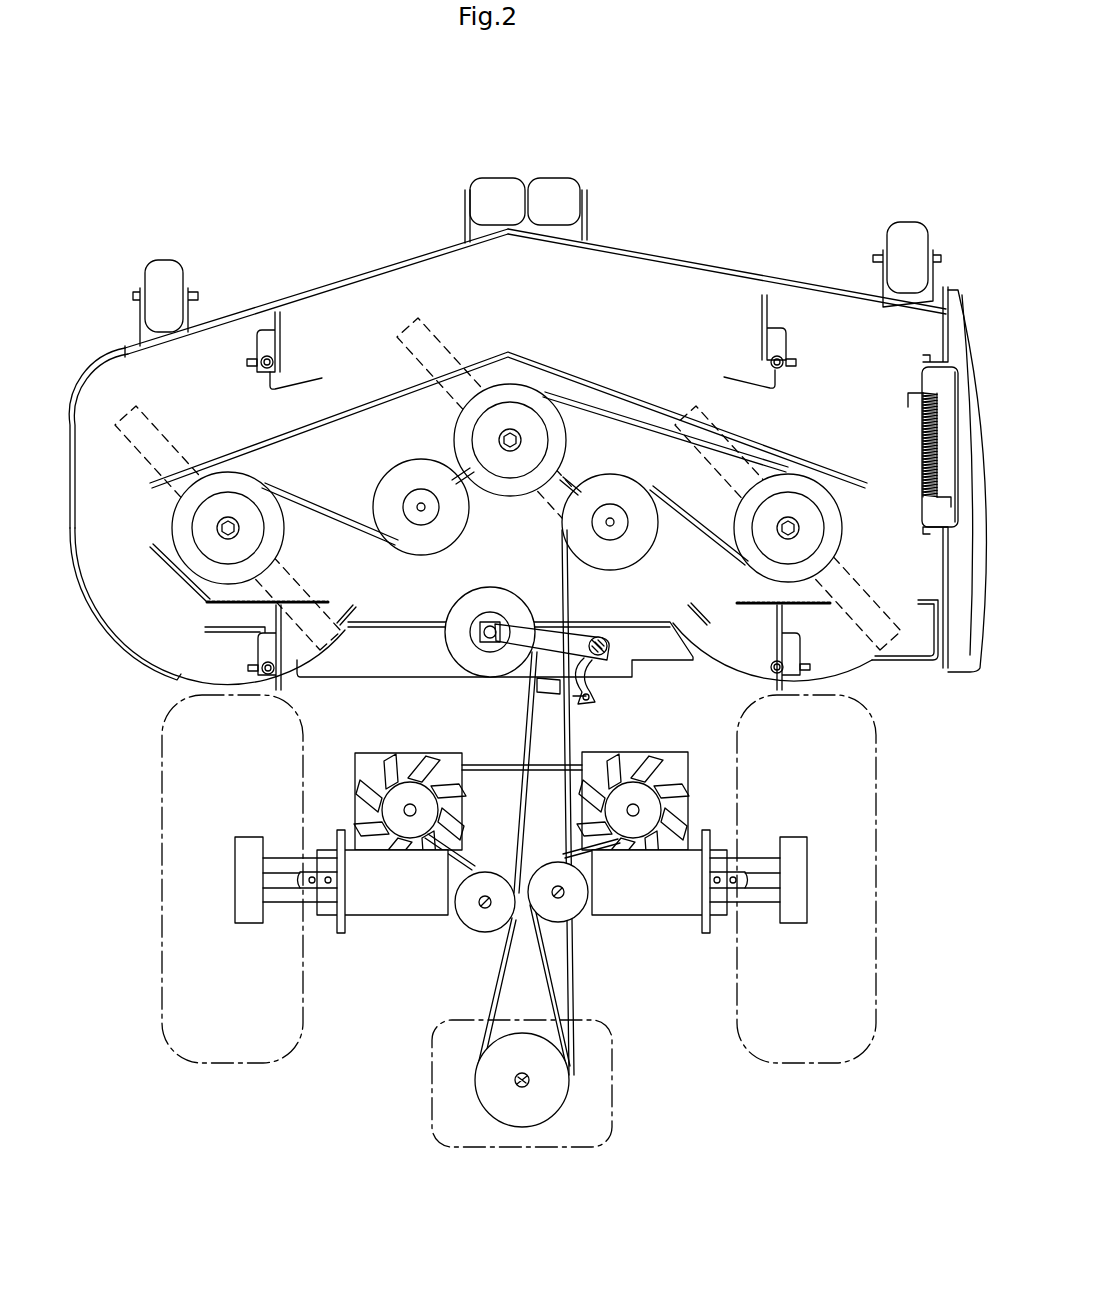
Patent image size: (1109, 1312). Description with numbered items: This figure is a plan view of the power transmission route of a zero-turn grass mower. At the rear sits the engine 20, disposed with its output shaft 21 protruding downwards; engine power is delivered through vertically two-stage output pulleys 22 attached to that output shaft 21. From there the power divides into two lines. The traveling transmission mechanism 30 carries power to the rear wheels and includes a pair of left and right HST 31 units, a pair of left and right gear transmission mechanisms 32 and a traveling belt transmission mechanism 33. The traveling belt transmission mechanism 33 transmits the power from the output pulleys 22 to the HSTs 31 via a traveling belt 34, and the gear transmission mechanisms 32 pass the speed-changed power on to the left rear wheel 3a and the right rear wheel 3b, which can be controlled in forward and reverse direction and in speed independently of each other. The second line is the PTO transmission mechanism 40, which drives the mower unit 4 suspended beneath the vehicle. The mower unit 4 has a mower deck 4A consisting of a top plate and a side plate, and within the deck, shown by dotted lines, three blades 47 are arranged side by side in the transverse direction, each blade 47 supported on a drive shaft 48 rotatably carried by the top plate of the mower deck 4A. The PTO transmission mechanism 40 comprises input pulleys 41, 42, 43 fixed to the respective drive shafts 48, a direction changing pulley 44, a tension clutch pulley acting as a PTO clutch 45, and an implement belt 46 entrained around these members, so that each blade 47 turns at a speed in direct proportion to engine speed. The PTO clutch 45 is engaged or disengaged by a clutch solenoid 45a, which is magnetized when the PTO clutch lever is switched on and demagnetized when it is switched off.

The mower unit 4 is at (330, 268).
The mower deck 4A is at (693, 285).
The blade 47 is at (447, 333).
The input pulley 41 is at (200, 533).
The input pulley 42 is at (536, 395).
The input pulley 43 is at (801, 478).
The drive shaft 48 is at (240, 520).
The direction changing pulley 44 is at (456, 527).
The PTO clutch 45 is at (460, 637).
The clutch solenoid 45a is at (548, 698).
The implement belt 46 is at (338, 484).
The PTO transmission mechanism 40 is at (572, 738).
The traveling belt 34 is at (495, 762).
The traveling transmission mechanism 30 is at (457, 875).
The HST 31 is at (400, 753).
The gear transmission mechanism 32 is at (377, 910).
The traveling belt transmission mechanism 33 is at (714, 789).
The left rear wheel 3a is at (160, 915).
The right rear wheel 3b is at (878, 907).
The engine 20 is at (532, 1150).
The output shaft 21 is at (516, 1082).
The output pulley 22 is at (550, 1085).